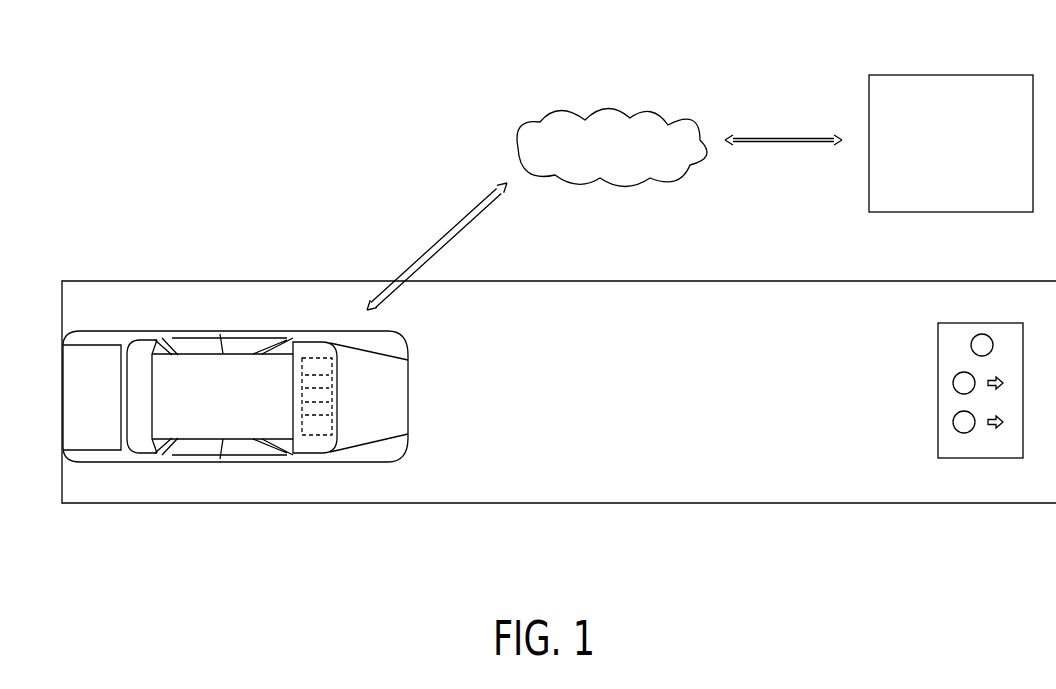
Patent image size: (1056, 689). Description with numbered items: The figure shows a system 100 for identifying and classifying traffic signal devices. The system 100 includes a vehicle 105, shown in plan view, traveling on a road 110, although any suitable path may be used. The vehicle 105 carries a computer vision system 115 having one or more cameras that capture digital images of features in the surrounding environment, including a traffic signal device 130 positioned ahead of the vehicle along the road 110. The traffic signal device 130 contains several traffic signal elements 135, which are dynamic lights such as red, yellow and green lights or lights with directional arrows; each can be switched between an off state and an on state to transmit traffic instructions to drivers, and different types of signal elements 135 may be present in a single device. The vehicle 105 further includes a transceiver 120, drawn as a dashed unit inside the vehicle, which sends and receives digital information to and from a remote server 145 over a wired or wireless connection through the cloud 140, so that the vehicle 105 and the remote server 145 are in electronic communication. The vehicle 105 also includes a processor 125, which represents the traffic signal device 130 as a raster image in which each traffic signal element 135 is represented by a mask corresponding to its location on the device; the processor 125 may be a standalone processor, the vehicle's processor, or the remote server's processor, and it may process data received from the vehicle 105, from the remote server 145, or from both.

The system 100 is at (250, 136).
The vehicle 105 is at (140, 332).
The road 110 is at (233, 492).
The computer vision system 115 is at (333, 422).
The transceiver 120 is at (344, 396).
The processor 125 is at (335, 372).
The traffic signal device 130 is at (950, 440).
The traffic signal element 135 is at (962, 420).
The cloud 140 is at (513, 150).
The remote server 145 is at (944, 88).